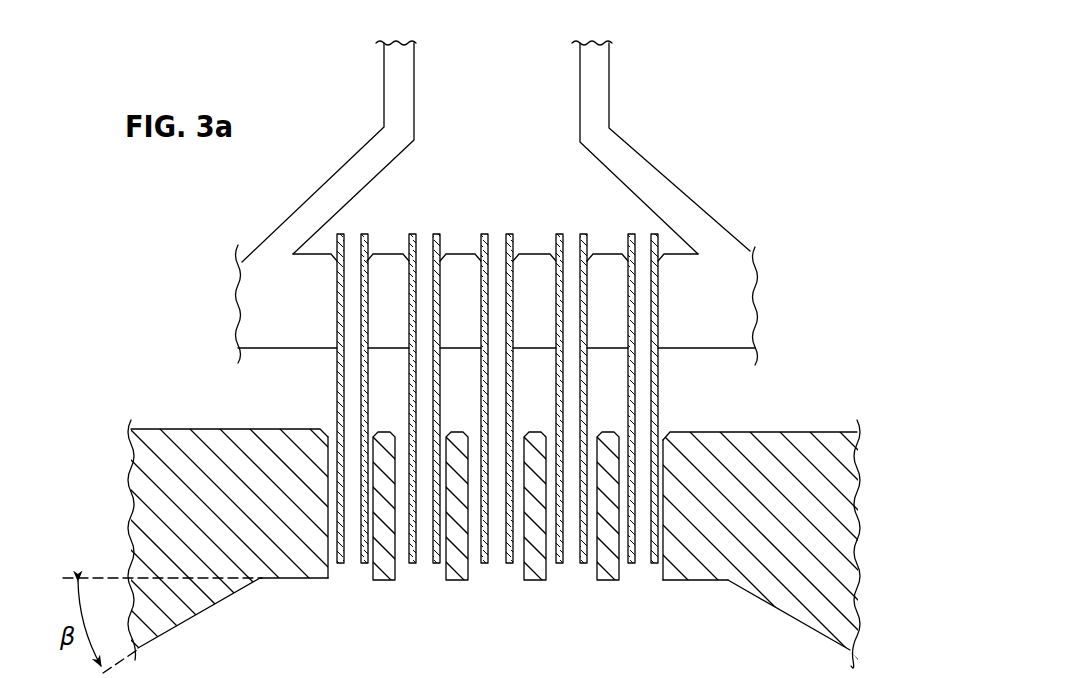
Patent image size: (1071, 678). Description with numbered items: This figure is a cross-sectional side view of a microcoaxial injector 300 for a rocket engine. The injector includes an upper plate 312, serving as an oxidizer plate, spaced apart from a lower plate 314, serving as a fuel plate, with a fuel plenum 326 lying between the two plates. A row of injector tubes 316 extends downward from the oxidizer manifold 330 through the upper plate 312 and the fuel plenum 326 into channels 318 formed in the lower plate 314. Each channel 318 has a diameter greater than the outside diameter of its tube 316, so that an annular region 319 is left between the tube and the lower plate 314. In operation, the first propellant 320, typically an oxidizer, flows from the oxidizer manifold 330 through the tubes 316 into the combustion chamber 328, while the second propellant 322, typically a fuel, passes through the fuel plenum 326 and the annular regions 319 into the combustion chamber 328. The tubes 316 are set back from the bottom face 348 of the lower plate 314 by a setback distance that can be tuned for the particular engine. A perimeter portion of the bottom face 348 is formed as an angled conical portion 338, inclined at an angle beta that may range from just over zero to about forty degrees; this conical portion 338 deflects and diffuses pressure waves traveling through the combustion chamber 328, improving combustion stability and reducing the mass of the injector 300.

The microcoaxial injector 300 is at (503, 203).
The upper plate 312 is at (718, 299).
The lower plate 314 is at (845, 479).
The injector tubes 316 is at (337, 277).
The channels 318 is at (328, 540).
The annular region 319 is at (370, 536).
The first propellant 320 is at (639, 235).
The second propellant 322 is at (331, 426).
The fuel plenum 326 is at (225, 397).
The combustion chamber 328 is at (530, 632).
The oxidizer manifold 330 is at (521, 142).
The conical portion 338 is at (770, 604).
The bottom face 348 is at (685, 580).